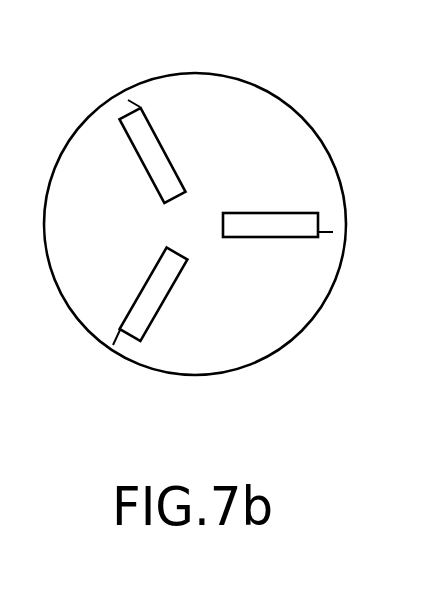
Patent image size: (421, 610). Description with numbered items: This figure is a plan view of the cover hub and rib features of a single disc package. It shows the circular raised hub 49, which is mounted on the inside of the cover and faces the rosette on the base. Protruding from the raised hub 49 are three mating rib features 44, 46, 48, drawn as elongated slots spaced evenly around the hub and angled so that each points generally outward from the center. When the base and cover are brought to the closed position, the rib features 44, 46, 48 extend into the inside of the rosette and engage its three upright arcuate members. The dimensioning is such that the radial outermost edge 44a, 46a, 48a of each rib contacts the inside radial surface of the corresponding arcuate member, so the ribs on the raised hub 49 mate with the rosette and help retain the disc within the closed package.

The rib feature 44 is at (277, 220).
The radial outermost edge 44a is at (318, 232).
The rib feature 46 is at (140, 153).
The radial outermost edge 46a is at (140, 107).
The rib feature 48 is at (155, 300).
The radial outermost edge 48a is at (120, 330).
The raised hub 49 is at (267, 317).